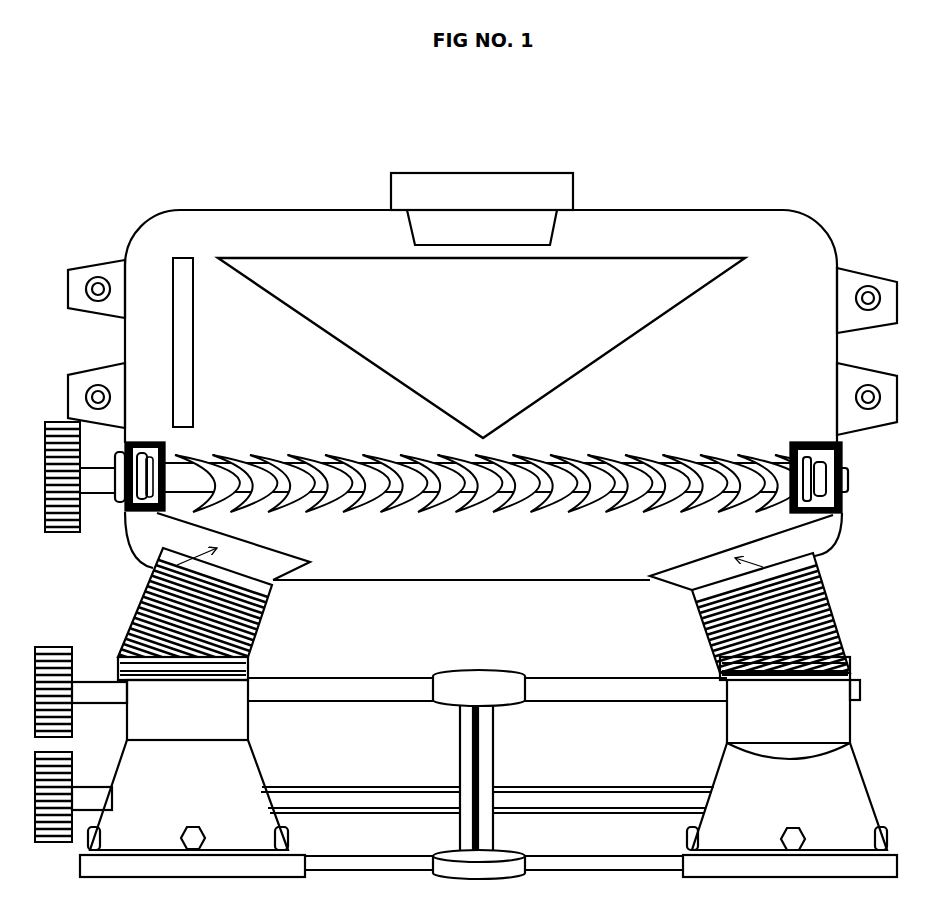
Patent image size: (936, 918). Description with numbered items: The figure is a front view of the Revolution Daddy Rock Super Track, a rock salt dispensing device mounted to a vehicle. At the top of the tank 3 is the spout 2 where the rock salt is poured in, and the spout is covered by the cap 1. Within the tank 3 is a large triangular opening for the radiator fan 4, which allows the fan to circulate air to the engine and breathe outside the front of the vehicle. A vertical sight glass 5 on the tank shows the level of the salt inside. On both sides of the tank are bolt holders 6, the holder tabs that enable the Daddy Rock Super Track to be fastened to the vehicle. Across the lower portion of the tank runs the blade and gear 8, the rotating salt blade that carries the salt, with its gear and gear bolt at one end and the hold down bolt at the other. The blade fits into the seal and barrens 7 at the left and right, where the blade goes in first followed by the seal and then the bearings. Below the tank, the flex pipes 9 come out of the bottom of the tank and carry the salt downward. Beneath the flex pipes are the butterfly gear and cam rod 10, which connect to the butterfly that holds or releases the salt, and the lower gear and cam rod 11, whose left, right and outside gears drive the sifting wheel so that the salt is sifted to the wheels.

The cap 1 is at (465, 193).
The spout 2 is at (502, 235).
The tank 3 is at (587, 242).
The opening for the radiator fan 4 is at (647, 300).
The sight glass 5 is at (185, 362).
The bolt holder 6 is at (83, 290).
The seal and barrens 7 is at (125, 518).
The blade and gear 8 is at (100, 480).
The flex pipe 9 is at (157, 567).
The butterfly gear and cam rod 10 is at (97, 697).
The lower gear and cam rod 11 is at (100, 802).